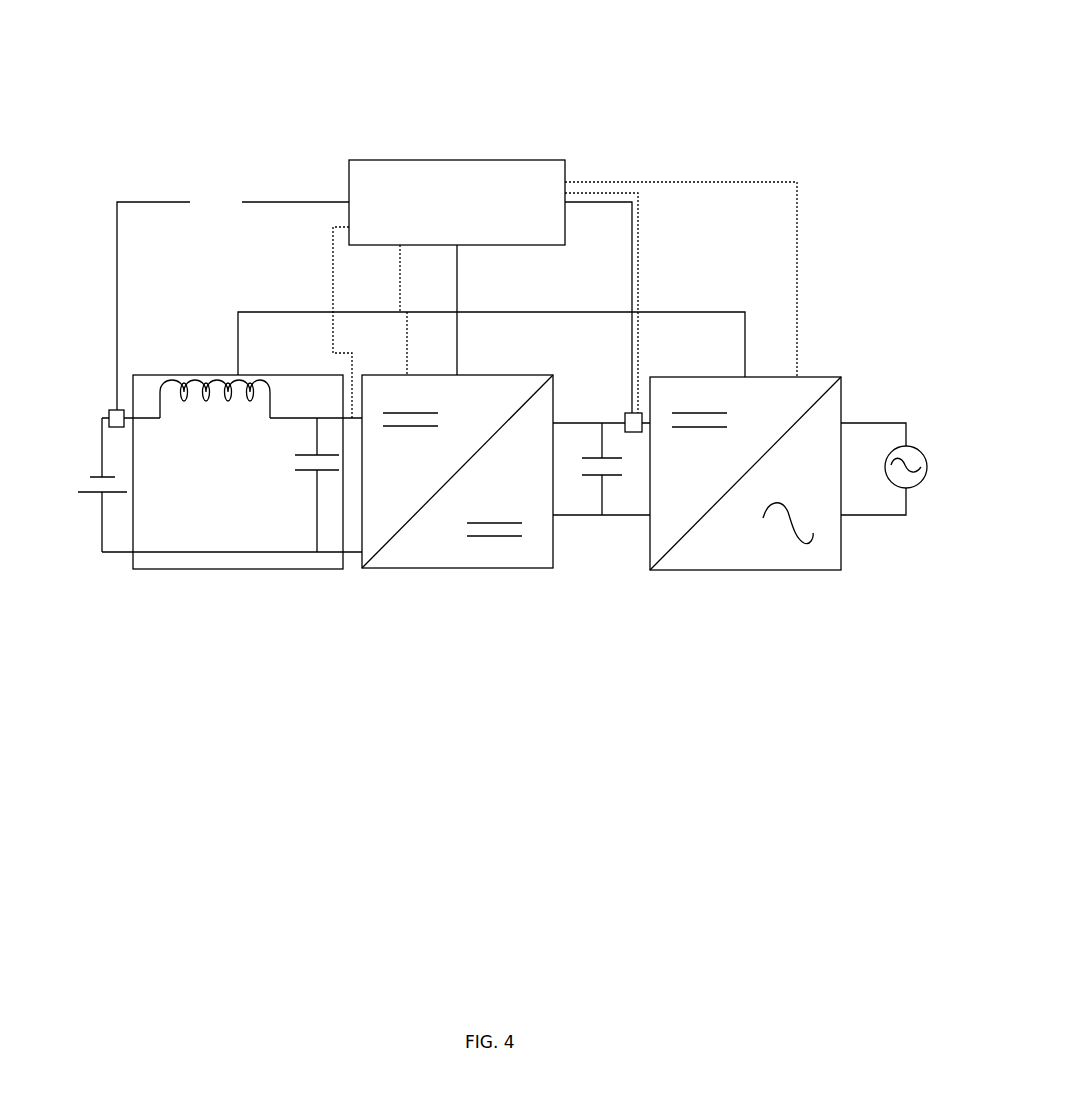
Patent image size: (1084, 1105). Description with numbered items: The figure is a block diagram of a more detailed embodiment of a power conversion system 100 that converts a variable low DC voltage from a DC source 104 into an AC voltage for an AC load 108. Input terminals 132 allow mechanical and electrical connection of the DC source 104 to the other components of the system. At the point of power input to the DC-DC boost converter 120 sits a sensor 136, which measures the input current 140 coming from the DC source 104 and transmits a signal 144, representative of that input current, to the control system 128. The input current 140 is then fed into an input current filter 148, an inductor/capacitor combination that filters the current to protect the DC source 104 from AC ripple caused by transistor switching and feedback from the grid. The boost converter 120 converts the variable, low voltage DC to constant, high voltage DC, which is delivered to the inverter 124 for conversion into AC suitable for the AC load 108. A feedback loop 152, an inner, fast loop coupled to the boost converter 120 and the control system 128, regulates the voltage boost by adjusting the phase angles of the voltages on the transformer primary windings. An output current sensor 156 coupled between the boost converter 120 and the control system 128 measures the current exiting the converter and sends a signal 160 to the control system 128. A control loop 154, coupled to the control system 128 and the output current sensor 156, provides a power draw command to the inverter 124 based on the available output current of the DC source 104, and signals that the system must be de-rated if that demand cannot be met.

The power conversion system 100 is at (717, 107).
The DC source 104 is at (103, 575).
The AC load 108 is at (902, 557).
The DC-DC boost converter 120 is at (458, 568).
The inverter 124 is at (745, 570).
The control system 128 is at (457, 160).
The input terminals 132 is at (133, 552).
The sensor 136 is at (114, 405).
The input current 140 is at (100, 445).
The signal 144 is at (233, 303).
The input current filter 148 is at (238, 569).
The feedback loop 152 is at (407, 330).
The control loop 154 is at (640, 212).
The output current sensor 156 is at (622, 421).
The signal 160 is at (598, 202).